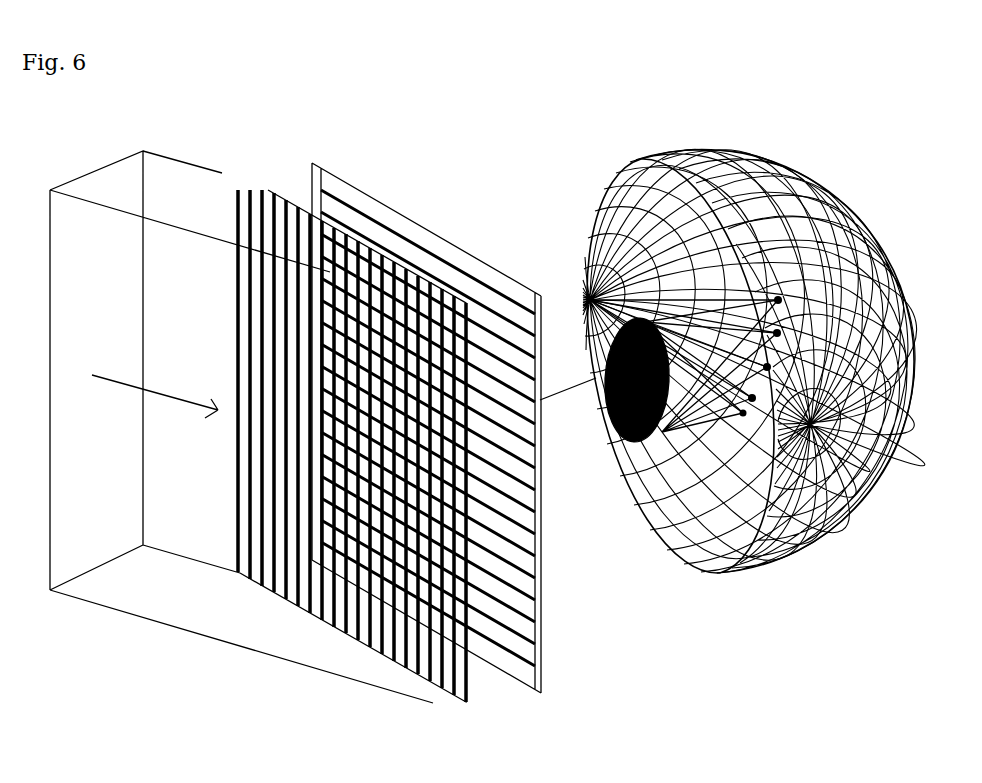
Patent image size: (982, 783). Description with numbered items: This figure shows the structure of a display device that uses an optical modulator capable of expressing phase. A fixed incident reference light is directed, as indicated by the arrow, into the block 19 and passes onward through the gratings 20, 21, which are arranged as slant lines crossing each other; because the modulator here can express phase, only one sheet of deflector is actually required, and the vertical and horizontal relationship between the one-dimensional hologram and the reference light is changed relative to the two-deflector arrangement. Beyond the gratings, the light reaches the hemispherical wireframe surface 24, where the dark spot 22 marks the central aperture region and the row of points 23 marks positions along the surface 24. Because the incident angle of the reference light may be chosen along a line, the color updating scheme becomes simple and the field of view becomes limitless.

The incident light beam / light guide block 19 is at (152, 178).
The first grating with vertical slats 20 is at (465, 705).
The second grating with horizontal slats 21 is at (537, 690).
The light source spot / aperture 22 is at (623, 435).
The detection points 23 is at (742, 416).
The hemispherical detector surface 24 is at (803, 548).